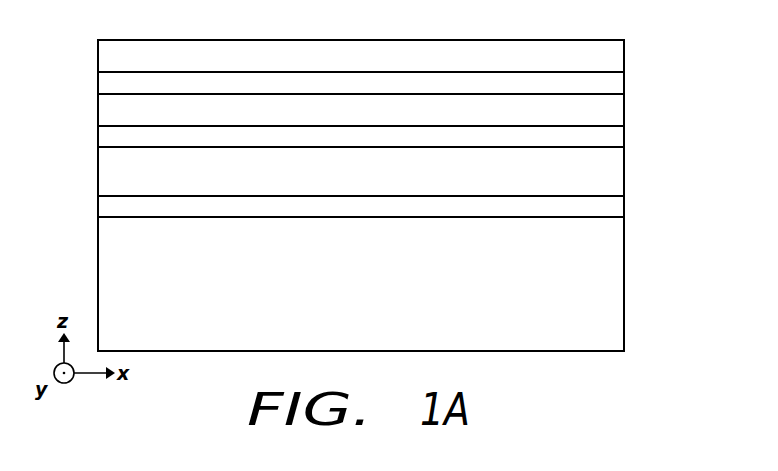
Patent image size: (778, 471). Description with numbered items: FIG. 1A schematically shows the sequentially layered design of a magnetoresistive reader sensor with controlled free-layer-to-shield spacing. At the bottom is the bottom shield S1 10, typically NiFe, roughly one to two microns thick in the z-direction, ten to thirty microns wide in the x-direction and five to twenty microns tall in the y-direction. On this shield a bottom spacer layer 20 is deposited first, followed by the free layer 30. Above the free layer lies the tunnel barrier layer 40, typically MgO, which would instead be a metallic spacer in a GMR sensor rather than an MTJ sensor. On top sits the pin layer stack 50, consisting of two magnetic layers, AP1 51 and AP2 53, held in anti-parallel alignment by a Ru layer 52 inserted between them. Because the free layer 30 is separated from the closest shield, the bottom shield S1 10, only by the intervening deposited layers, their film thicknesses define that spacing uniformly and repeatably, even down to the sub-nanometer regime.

The bottom shield S1 10 is at (608, 291).
The bottom spacer layer 20 is at (608, 205).
The free layer 30 is at (608, 173).
The tunnel barrier layer 40 is at (608, 135).
The pin layer stack 50 is at (88, 42).
The AP1 layer 51 is at (608, 108).
The Ru layer 52 is at (608, 81).
The AP2 layer 53 is at (608, 55).